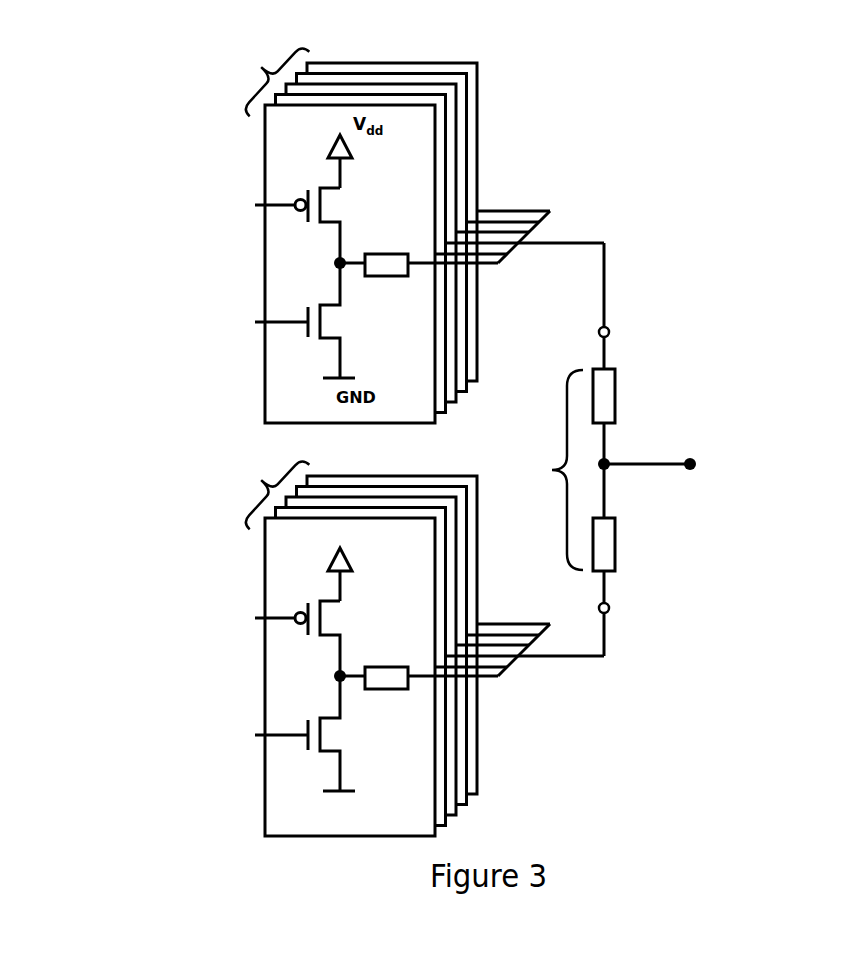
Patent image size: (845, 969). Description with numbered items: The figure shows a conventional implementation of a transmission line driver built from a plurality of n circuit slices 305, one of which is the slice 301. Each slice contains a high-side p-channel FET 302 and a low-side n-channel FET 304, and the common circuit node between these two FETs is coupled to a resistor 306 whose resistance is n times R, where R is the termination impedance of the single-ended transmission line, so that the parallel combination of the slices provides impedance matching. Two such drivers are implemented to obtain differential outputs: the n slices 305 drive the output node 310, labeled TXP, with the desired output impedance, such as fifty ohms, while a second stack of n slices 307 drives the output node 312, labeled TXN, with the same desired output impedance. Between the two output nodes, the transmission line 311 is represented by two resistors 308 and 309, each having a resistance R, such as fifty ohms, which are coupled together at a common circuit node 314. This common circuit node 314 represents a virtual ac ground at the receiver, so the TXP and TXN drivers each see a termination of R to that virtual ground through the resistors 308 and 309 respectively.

The slice 301 is at (260, 137).
The p-channel FET 302 is at (290, 188).
The n-channel FET 304 is at (292, 305).
The n slices 305 is at (252, 72).
The resistor 306 is at (408, 252).
The n slices 307 is at (250, 485).
The resistor 308 is at (622, 388).
The resistor 309 is at (623, 550).
The differential line-driver output node 310 is at (612, 327).
The transmission line 311 is at (547, 464).
The differential line-driver output node 312 is at (612, 615).
The common circuit node 314 is at (697, 463).